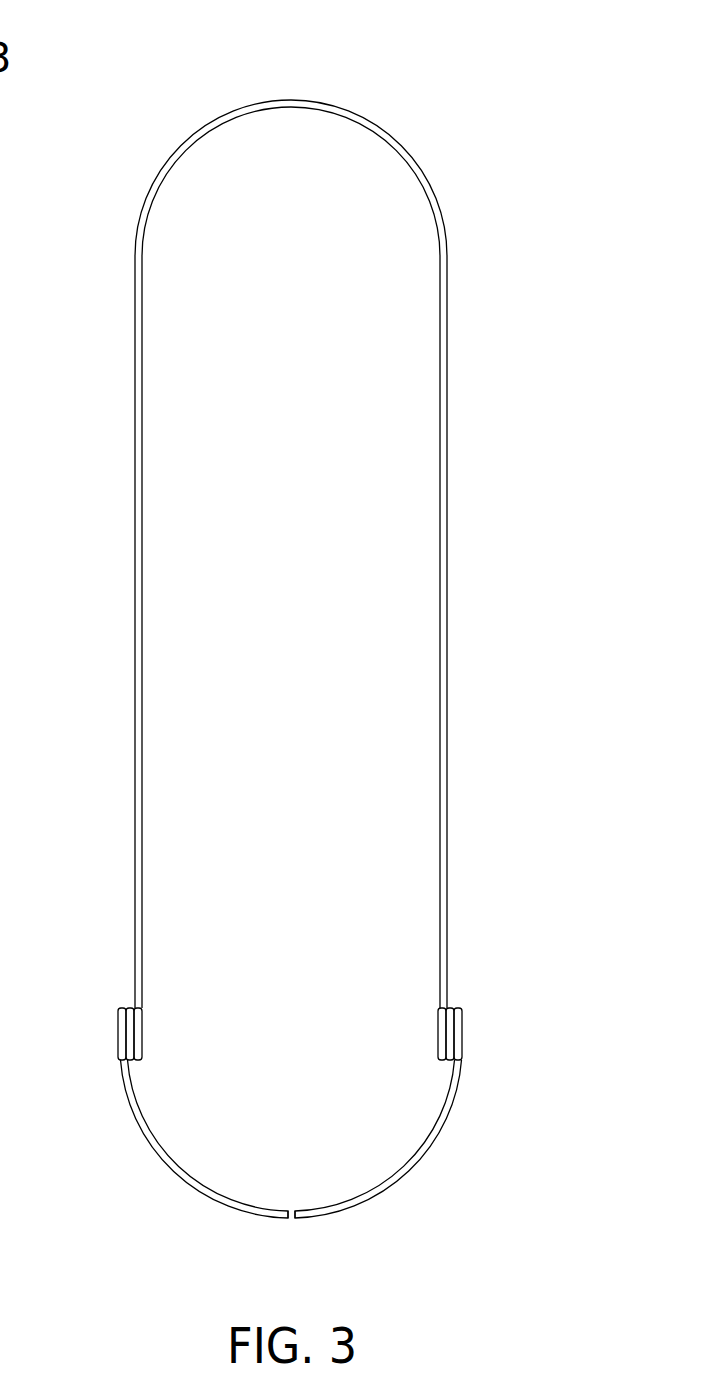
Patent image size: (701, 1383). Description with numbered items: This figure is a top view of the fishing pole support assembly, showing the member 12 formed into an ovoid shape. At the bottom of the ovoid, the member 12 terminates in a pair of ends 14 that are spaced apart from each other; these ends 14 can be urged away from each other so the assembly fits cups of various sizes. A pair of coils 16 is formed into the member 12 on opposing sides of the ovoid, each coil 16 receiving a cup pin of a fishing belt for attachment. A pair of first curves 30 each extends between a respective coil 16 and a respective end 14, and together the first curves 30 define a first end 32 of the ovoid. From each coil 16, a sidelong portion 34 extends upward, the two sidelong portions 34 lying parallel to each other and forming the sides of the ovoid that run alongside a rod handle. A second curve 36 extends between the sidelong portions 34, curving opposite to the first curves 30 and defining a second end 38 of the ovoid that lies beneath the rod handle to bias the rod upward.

The member 12 is at (103, 349).
The ends 14 is at (288, 1210).
The coils 16 is at (122, 1030).
The first curves 30 is at (165, 1195).
The first end 32 is at (360, 1238).
The sidelong portions 34 is at (110, 669).
The second curve 36 is at (300, 75).
The second end 38 is at (236, 72).